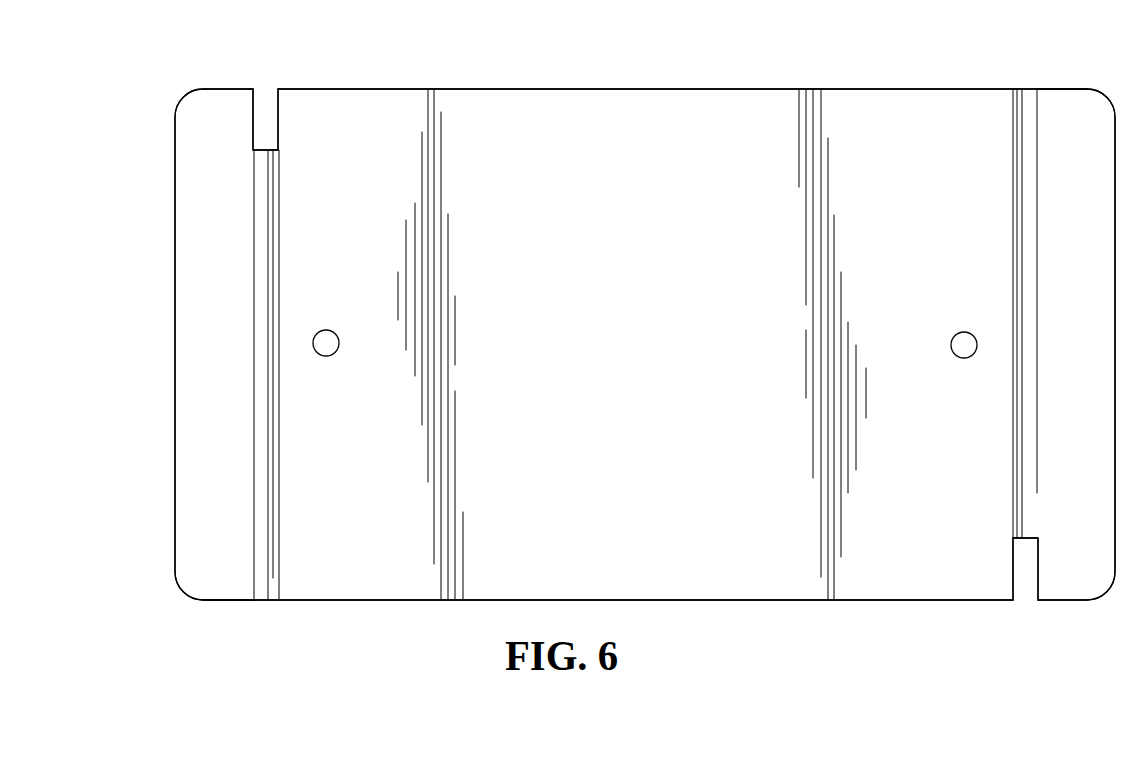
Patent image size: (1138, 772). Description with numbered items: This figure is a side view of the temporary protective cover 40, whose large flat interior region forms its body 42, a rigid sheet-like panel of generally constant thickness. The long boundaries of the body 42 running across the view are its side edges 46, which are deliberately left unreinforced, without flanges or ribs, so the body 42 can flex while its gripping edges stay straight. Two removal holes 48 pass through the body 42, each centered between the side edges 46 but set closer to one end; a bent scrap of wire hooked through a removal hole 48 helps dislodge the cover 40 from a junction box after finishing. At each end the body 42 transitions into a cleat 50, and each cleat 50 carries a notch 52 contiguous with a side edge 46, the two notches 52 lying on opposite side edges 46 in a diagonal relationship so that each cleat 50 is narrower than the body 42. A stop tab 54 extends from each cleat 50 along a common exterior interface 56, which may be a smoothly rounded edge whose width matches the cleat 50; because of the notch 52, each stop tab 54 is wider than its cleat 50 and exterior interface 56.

The temporary cover 40 is at (313, 611).
The body 42 is at (635, 365).
The side edges 46 is at (700, 89).
The removal hole 48 is at (327, 330).
The cleat 50 is at (279, 225).
The notch 52 is at (263, 149).
The stop tab 54 is at (205, 345).
The exterior interface 56 is at (265, 498).